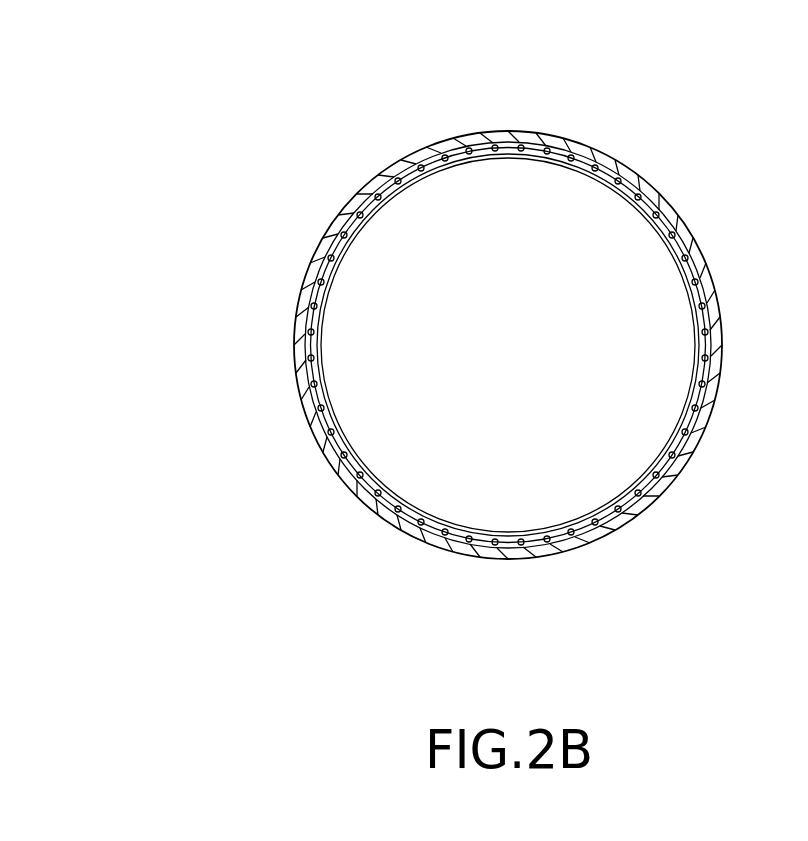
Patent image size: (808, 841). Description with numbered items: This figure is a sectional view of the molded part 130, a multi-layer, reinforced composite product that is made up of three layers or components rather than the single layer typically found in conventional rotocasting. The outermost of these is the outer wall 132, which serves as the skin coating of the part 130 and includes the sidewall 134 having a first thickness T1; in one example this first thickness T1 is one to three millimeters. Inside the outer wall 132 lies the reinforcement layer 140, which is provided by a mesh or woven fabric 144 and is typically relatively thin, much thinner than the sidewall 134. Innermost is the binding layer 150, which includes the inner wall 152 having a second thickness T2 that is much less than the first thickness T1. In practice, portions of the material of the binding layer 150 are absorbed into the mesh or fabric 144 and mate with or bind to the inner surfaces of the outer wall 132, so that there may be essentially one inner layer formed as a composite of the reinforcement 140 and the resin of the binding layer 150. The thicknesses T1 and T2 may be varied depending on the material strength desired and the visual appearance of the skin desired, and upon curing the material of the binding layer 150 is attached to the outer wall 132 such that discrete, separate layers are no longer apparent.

The part 130 is at (628, 115).
The outer wall 132 is at (665, 188).
The sidewall 134 is at (687, 228).
The reinforcement layer 140 is at (455, 157).
The mesh/fabric 144 is at (408, 168).
The binding layer 150 is at (688, 327).
The inner wall 152 is at (690, 393).
The first thickness T1 is at (510, 493).
The second thickness T2 is at (363, 540).